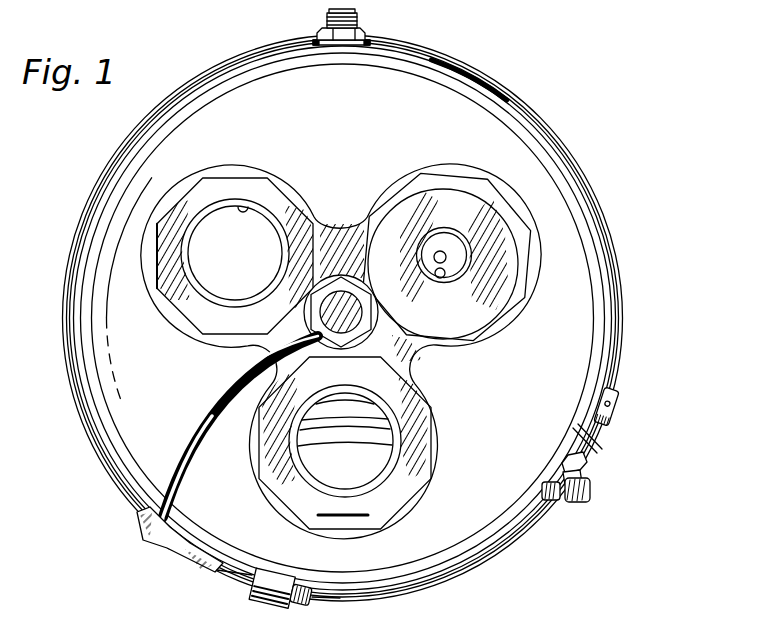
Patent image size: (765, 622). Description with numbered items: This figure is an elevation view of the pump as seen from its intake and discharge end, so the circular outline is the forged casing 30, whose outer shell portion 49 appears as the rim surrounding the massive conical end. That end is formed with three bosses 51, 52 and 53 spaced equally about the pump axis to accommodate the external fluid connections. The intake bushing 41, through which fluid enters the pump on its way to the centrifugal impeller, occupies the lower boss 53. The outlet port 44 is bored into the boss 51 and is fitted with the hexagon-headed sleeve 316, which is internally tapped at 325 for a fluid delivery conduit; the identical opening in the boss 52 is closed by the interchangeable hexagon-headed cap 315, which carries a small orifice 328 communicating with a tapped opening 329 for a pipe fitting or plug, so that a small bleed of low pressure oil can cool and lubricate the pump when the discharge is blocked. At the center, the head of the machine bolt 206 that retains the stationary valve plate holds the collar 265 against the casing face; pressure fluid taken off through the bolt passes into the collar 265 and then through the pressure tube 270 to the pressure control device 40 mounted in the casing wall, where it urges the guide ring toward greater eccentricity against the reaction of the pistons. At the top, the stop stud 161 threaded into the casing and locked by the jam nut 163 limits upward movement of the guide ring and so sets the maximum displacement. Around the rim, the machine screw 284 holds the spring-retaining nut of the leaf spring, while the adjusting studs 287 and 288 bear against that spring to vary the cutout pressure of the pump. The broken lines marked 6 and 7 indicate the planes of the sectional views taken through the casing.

The section line 6- 6 is at (343, 610).
The section line 7- 7 is at (650, 313).
The casing 30 is at (100, 170).
The pressure control device 40 is at (137, 544).
The intake bushing 41 is at (298, 490).
The outlet port 44 is at (250, 277).
The outer shell portion 49 is at (424, 586).
The first boss 51 is at (190, 172).
The second boss 52 is at (441, 161).
The third boss 53 is at (404, 497).
The stop stud 161 is at (357, 19).
The jam nut 163 is at (318, 32).
The machine bolt 206 is at (336, 297).
The collar 265 is at (392, 337).
The pressure tube 270 is at (200, 414).
The machine screw 284 is at (618, 405).
The adjusting stud 287 is at (260, 606).
The adjusting stud 288 is at (591, 492).
The cap 315 is at (512, 262).
The sleeve 316 is at (183, 301).
The internal tap 325 is at (243, 210).
The orifice 328 is at (446, 252).
The tapped opening 329 is at (440, 279).